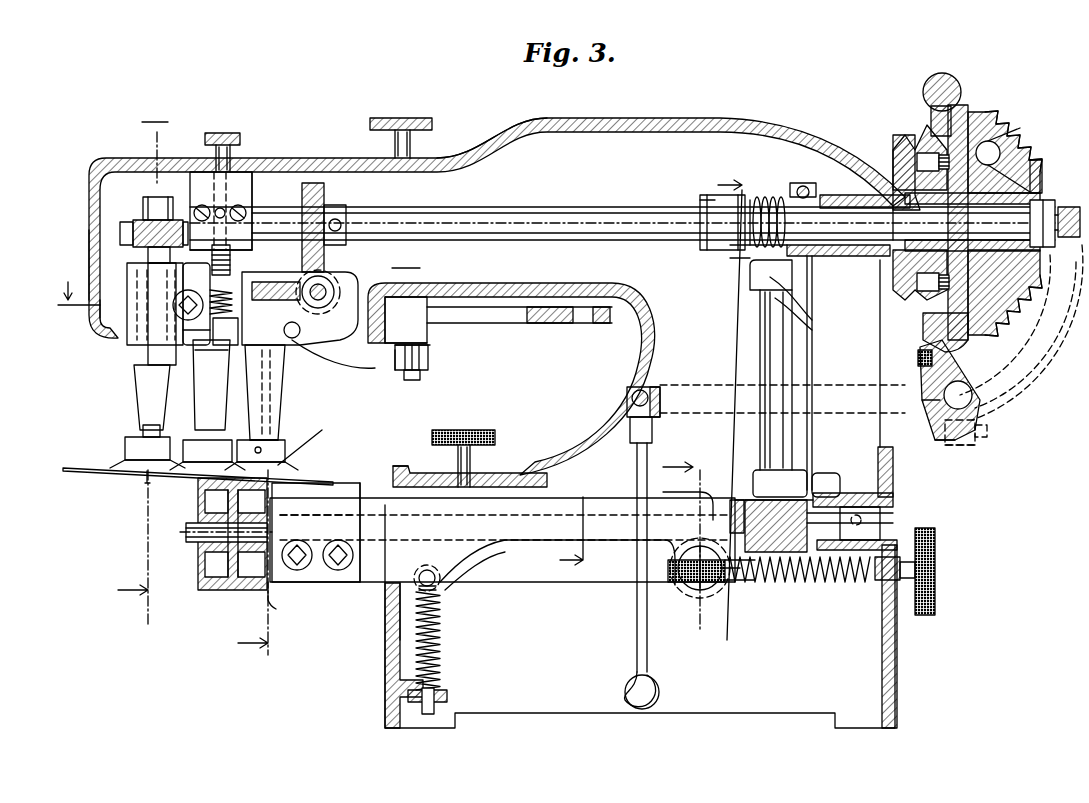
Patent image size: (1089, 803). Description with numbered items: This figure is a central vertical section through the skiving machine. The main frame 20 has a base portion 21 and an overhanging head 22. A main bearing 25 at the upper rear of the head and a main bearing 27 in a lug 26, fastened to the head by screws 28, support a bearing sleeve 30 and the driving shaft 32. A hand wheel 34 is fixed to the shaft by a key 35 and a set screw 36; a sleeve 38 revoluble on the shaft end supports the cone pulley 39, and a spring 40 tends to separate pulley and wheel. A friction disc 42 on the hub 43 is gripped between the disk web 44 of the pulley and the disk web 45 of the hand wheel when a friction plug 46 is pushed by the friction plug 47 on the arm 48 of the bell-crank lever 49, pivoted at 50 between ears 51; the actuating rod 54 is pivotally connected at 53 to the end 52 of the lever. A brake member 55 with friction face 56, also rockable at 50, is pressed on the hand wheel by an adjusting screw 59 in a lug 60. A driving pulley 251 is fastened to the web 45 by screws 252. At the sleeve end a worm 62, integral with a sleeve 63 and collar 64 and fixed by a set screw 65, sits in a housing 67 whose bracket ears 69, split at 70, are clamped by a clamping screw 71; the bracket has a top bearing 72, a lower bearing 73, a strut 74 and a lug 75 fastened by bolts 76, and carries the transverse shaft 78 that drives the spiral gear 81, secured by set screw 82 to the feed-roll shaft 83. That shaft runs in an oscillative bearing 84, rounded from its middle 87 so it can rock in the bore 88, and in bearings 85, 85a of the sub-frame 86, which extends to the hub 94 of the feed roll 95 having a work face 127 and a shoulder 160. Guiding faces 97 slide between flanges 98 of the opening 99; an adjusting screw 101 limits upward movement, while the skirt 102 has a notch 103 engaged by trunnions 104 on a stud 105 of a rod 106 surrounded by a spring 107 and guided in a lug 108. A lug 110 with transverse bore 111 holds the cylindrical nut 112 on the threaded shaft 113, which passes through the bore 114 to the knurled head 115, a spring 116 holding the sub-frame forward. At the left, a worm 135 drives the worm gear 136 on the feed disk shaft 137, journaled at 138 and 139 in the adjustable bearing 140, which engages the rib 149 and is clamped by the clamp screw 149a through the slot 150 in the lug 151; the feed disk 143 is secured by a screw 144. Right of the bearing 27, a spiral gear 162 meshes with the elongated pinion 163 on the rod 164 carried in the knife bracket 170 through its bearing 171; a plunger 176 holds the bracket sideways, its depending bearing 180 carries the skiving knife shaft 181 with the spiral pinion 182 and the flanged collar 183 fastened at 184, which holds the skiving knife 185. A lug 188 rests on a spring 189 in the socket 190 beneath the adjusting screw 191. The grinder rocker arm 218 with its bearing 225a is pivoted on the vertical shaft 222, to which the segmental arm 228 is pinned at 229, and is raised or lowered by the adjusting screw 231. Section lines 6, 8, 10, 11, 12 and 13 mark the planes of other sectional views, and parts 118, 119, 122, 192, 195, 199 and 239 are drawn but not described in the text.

The arm 20 is at (786, 126).
The bed 21 is at (562, 698).
The arm top wall 22 is at (497, 145).
The bearing bracket 25 is at (840, 195).
The bearing block 26 is at (240, 172).
The bearing block lower part 27 is at (252, 218).
The bearing block upper part 28 is at (250, 195).
The bearing bracket lower 30 is at (828, 258).
The main shaft 32 is at (290, 207).
The pulley hub knob 34 is at (942, 73).
The bracket 35 is at (898, 188).
The shaft axis 36 is at (622, 212).
The pulley hub 38 is at (1036, 180).
The pulley rim 39 is at (1032, 148).
The pulley web 40 is at (1030, 185).
The pulley plate 42 is at (966, 125).
The pulley spoke 43 is at (1015, 150).
The pulley spoke 44 is at (1000, 135).
The cam 45 is at (925, 112).
The collar 46 is at (1048, 205).
The nut 47 is at (1070, 207).
The belt path 48 is at (1042, 343).
The belt path inner 49 is at (990, 416).
The pawl 50 is at (972, 393).
The pawl arm 51 is at (925, 420).
The clamp block 52 is at (660, 395).
The clamp pin 53 is at (645, 390).
The drive rod 54 is at (637, 452).
The pawl lever 55 is at (922, 396).
The pawl screw 56 is at (916, 360).
The stop 59 is at (978, 440).
The stop arm 60 is at (975, 450).
The spring 62 is at (765, 196).
The spring seat 63 is at (754, 200).
The clutch block 64 is at (718, 252).
The clutch slot 65 is at (712, 196).
The link 67 is at (814, 320).
The pin block 69 is at (803, 183).
The standard 70 is at (823, 165).
The pin 71 is at (806, 187).
The link arm 72 is at (814, 330).
The guide 73 is at (812, 445).
The standard wall 74 is at (800, 342).
The link 75 is at (712, 414).
The worm 76 is at (695, 492).
The rod 78 is at (763, 315).
The bearing 81 is at (780, 483).
The bearing 82 is at (738, 500).
The shaft 83 is at (222, 548).
The bearing cap 84 is at (893, 502).
The bracket 85 is at (272, 592).
The knurled collar 85a is at (688, 584).
The bed body 86 is at (385, 531).
The bearing block 87 is at (878, 470).
The bearing lower cap 88 is at (895, 545).
The shaft 94 is at (205, 524).
The flange 95 is at (210, 591).
The bed wall 97 is at (385, 598).
The bed wall inner 98 is at (385, 614).
The bracket 99 is at (408, 472).
The knob 101 is at (472, 452).
The lever 102 is at (482, 562).
The pivot 103 is at (445, 581).
The pivot washer 104 is at (440, 584).
The pivot pin 105 is at (437, 588).
The bolt 106 is at (435, 707).
The spring 107 is at (441, 648).
The nut 108 is at (448, 694).
The eccentric 110 is at (690, 590).
The eccentric pin 111 is at (705, 590).
The eccentric collar 112 is at (722, 586).
The screw 113 is at (900, 568).
The plate 114 is at (882, 600).
The knob 115 is at (935, 598).
The spring 116 is at (790, 585).
The screw 118 is at (297, 572).
The bracket edge 119 is at (345, 498).
The bracket 122 is at (300, 496).
The flange 127 is at (250, 592).
The bolt 135 is at (143, 210).
The nut 136 is at (122, 232).
The bar 137 is at (148, 254).
The block 138 is at (135, 278).
The presser bar 139 is at (134, 401).
The presser bar upper 140 is at (148, 353).
The plate 143 is at (68, 472).
The needle 144 is at (146, 485).
The casing wall 149 is at (89, 252).
The casing wall 149a is at (176, 308).
The nut 150 is at (174, 308).
The block 151 is at (196, 304).
The web 160 is at (232, 592).
The gear 162 is at (313, 183).
The hub 163 is at (336, 245).
The block 164 is at (340, 290).
The rod 170 is at (440, 325).
The block 171 is at (386, 318).
The pin 176 is at (298, 336).
The needle bar 180 is at (280, 396).
The needle bar guide 181 is at (285, 373).
The link 182 is at (363, 372).
The foot 183 is at (287, 450).
The foot bar 184 is at (270, 438).
The lug 185 is at (368, 462).
The spring 188 is at (232, 275).
The spring seat 189 is at (238, 292).
The bar 190 is at (213, 342).
The knob 191 is at (220, 140).
The foot 192 is at (125, 446).
The bar 195 is at (195, 442).
The foot 199 is at (190, 472).
The bolt 218 is at (402, 371).
The bolt head 222 is at (420, 375).
The plate 225a is at (412, 346).
The sleeve 228 is at (530, 325).
The plate 229 is at (416, 332).
The knob 231 is at (412, 143).
The sleeve 239 is at (600, 325).
The nut 251 is at (918, 152).
The bolt 252 is at (917, 158).
The section line 6 is at (238, 285).
The section line 8 is at (730, 408).
The section line 10 is at (687, 548).
The section line 11 is at (143, 374).
The section line 12 is at (290, 541).
The section line 13 is at (577, 533).